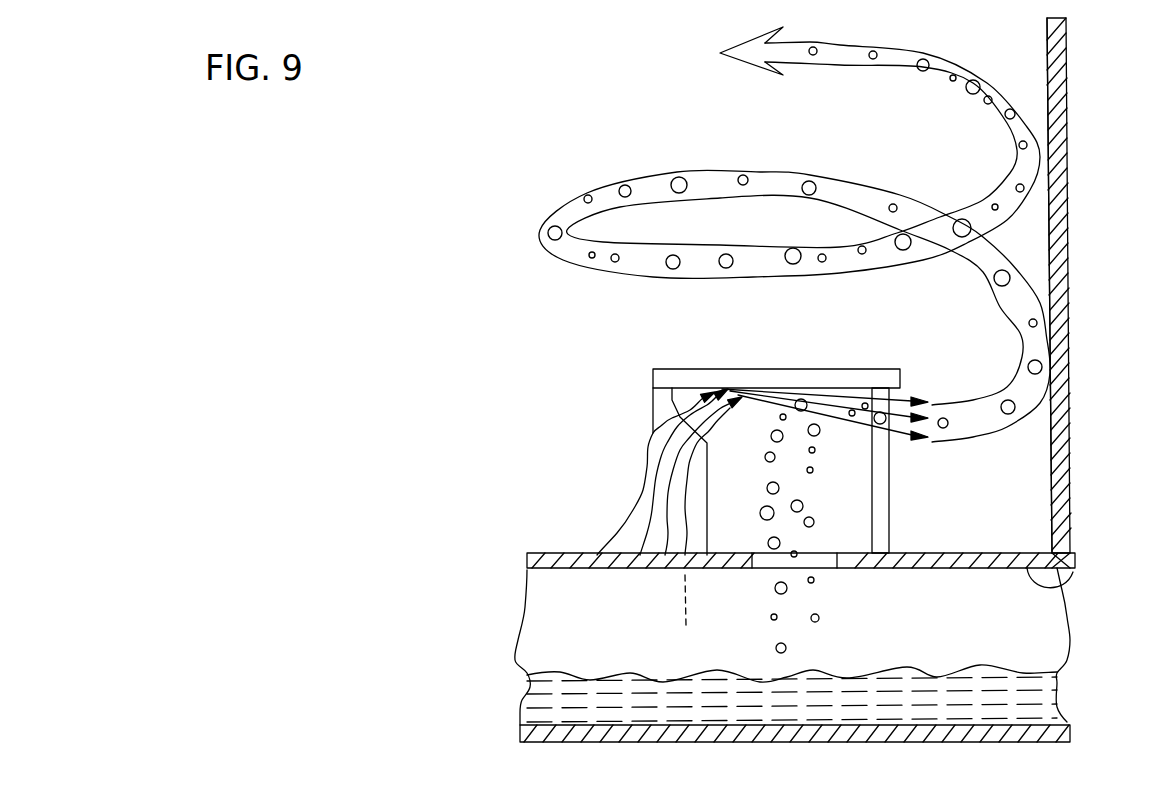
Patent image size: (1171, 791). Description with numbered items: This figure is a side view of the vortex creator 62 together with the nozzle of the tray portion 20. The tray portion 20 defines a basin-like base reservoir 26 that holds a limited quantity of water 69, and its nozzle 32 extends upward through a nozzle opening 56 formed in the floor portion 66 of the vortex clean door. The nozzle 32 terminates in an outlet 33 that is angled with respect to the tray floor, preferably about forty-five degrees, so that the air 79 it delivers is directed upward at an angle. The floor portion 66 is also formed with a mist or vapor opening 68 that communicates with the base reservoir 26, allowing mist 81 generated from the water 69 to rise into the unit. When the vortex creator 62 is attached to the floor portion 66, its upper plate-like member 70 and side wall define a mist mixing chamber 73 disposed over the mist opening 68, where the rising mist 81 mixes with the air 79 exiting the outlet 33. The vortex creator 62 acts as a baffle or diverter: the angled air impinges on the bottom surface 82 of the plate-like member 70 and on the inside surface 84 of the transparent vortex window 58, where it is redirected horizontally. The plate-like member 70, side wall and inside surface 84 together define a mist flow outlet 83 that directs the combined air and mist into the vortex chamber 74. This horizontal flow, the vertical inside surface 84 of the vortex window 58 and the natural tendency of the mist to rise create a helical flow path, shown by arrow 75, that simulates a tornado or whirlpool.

The tray portion 20 is at (537, 740).
The base reservoir 26 is at (547, 630).
The nozzle 32 is at (643, 487).
The outlet 33 is at (683, 423).
The nozzle opening 56 is at (687, 613).
The vortex window 58 is at (1067, 115).
The vortex creator 62 is at (653, 370).
The floor portion 66 is at (1068, 585).
The mist or vapor opening 68 is at (823, 562).
The water 69 is at (958, 683).
The upper plate-like member 70 is at (832, 368).
The mist mixing chamber 73 is at (852, 440).
The vortex chamber 74 is at (763, 120).
The arrow indicating helical flow path 75 is at (852, 52).
The air 79 is at (715, 390).
The mist or vapor 81 is at (778, 488).
The bottom surface 82 is at (853, 400).
The mist flow outlet 83 is at (815, 450).
The inside surface 84 is at (1047, 67).